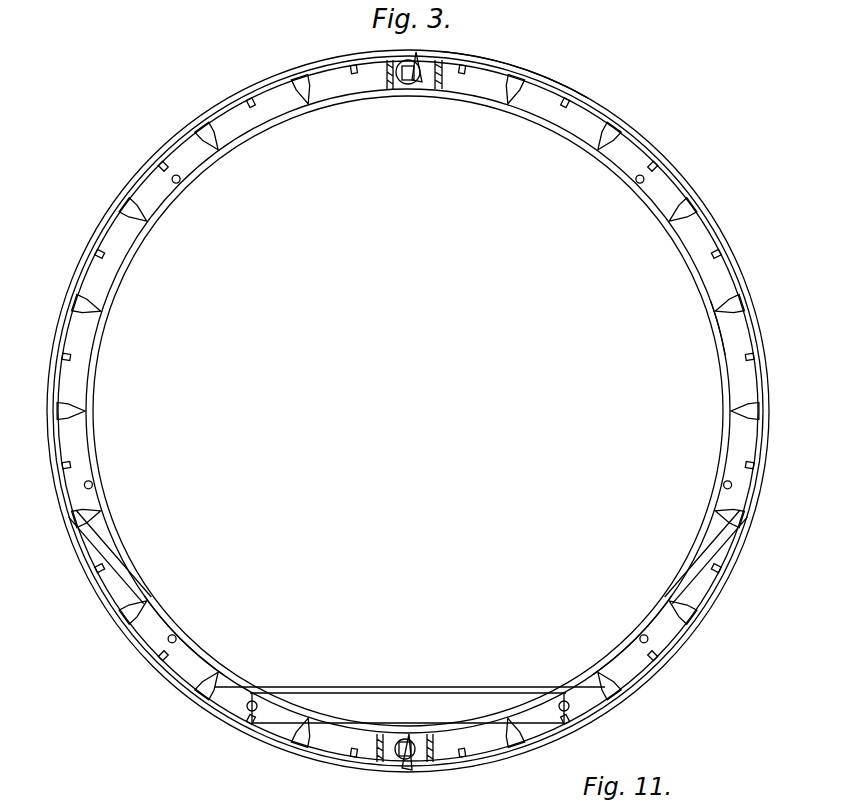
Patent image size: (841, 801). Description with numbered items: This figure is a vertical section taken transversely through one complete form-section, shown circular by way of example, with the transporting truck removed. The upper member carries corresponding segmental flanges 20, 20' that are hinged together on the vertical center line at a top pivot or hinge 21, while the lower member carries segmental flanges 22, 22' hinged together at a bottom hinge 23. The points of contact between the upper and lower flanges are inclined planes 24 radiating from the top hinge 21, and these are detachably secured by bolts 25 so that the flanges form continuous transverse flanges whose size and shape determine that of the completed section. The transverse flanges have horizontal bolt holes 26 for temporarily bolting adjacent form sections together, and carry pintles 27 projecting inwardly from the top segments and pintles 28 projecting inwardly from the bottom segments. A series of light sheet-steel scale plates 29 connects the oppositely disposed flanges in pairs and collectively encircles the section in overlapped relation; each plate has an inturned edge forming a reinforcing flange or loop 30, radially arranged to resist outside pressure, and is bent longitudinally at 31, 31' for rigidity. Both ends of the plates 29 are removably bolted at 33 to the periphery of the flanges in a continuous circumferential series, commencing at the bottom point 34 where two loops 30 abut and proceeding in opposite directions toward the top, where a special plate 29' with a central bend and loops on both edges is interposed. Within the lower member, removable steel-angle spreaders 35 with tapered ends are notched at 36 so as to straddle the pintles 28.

The segmental flange 20 is at (408, 411).
The segmental flange 20' is at (692, 319).
The hinge 21 is at (402, 89).
The segmental flange 22 is at (183, 627).
The segmental flange 22' is at (632, 623).
The hinge 23 is at (408, 765).
The inclined plane 24 is at (115, 560).
The bolt 25 is at (104, 516).
The bolt hole 26 is at (181, 181).
The pintle 27 is at (93, 485).
The pintle 28 is at (252, 700).
The scale plate 29 is at (414, 415).
The special plate 29' is at (514, 66).
The reinforcing flange or loop 30 is at (418, 92).
The longitudinal bend 31 is at (415, 396).
The longitudinal bend 31' is at (417, 420).
The bolt 33 is at (370, 73).
The abutment point 34 is at (305, 748).
The spreader 35 is at (404, 690).
The notch 36 is at (250, 720).